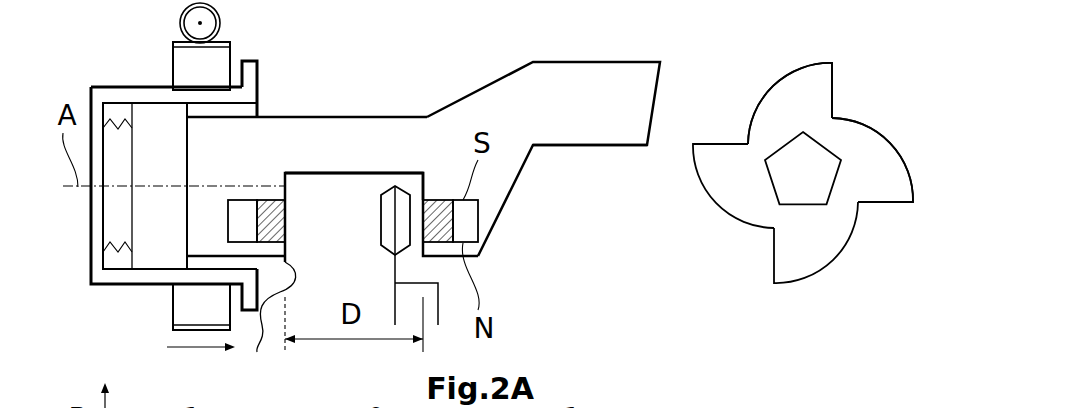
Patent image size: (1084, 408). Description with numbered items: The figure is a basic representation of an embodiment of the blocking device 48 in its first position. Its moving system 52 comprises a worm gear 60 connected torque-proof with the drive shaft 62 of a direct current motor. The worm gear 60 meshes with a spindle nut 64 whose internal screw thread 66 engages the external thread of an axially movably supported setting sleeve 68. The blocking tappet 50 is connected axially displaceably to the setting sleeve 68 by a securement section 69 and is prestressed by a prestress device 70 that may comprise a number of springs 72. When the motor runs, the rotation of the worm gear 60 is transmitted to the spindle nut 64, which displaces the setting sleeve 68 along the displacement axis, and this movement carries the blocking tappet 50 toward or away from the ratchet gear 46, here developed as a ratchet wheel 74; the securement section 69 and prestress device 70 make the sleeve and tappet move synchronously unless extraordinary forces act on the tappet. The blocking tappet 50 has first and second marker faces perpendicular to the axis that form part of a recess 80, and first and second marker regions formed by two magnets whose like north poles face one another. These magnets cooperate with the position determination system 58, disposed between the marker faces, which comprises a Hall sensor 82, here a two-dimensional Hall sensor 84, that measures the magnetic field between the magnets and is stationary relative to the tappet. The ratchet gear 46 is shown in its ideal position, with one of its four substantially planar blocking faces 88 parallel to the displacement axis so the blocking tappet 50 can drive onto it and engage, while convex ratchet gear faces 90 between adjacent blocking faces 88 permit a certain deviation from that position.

The ratchet gear 46 is at (819, 211).
The blocking device 48 is at (676, 293).
The blocking tappet 50 is at (603, 130).
The moving system 52 is at (260, 24).
The position determination system 58 is at (398, 134).
The worm gear 60 is at (150, 21).
The drive shaft 62 is at (185, 20).
The spindle nut 64 is at (230, 53).
The internal screw thread 66 is at (200, 84).
The setting sleeve 68 is at (258, 77).
The securement section 69 is at (179, 165).
The prestress device 70 is at (102, 231).
The springs 72 is at (121, 250).
The ratchet wheel 74 is at (859, 293).
The recess 80 is at (313, 233).
The Hall sensor 82 is at (375, 255).
The 2D Hall sensor 84 is at (380, 212).
The blocking faces 88 is at (893, 203).
The convex ratchet gear face 90 is at (893, 140).